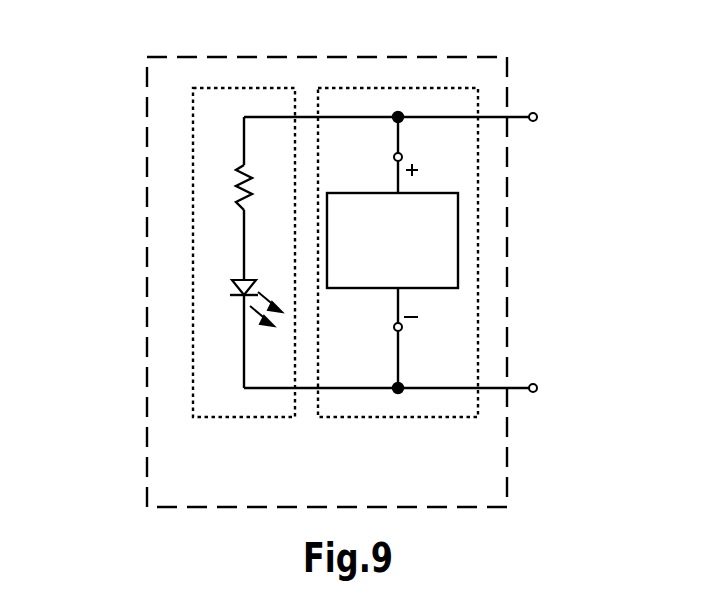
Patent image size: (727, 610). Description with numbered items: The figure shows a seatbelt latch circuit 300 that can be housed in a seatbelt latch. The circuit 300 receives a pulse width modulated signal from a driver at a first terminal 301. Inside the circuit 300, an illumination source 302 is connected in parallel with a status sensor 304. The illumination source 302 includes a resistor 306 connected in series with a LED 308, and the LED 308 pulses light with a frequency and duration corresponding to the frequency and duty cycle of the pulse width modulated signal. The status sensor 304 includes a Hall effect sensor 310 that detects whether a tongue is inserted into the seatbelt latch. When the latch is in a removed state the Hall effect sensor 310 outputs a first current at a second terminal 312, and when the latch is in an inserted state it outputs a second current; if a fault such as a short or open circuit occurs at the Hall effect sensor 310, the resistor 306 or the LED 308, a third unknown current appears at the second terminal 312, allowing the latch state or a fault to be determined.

The circuit 300 is at (139, 54).
The first terminal 301 is at (538, 112).
The illumination source 302 is at (230, 88).
The status sensor 304 is at (362, 88).
The resistor R1 306 is at (253, 186).
The LED 308 is at (252, 283).
The Hall effect sensor 310 is at (362, 193).
The second terminal 312 is at (538, 383).